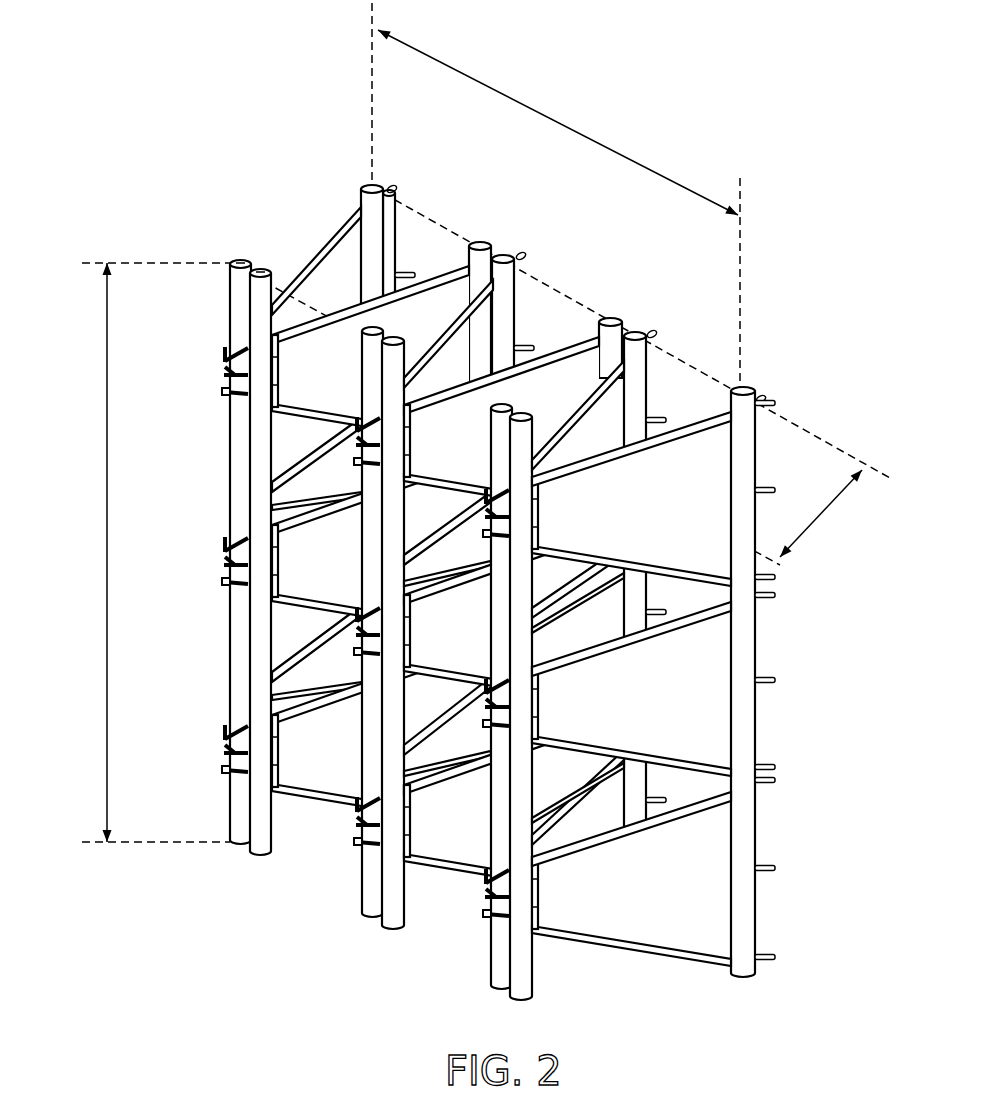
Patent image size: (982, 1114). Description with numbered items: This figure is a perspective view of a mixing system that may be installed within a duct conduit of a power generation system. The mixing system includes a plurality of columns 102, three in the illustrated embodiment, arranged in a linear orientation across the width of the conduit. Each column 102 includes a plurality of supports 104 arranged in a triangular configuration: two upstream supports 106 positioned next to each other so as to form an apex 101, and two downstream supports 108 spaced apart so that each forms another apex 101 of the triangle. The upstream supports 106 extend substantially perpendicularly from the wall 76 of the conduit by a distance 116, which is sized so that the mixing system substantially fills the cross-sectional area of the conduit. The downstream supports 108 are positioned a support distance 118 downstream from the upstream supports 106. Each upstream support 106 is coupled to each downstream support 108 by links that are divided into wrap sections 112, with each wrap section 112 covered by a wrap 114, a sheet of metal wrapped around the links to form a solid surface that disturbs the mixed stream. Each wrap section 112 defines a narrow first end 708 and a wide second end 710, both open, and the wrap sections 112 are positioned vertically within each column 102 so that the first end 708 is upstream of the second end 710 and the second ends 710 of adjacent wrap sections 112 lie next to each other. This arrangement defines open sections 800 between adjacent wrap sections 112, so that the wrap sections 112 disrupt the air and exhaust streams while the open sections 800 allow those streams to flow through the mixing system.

The apex 101 is at (369, 178).
The column 102 is at (504, 551).
The support 104 is at (468, 248).
The upstream support 106 is at (253, 482).
The downstream support 108 is at (394, 190).
The wrap section 112 is at (609, 905).
The wrap 114 is at (717, 827).
The distance 116 is at (107, 555).
The support distance 118 is at (822, 516).
The wall 76 is at (385, 926).
The first end 708 is at (533, 912).
The second end 710 is at (725, 884).
The open section 800 is at (585, 810).